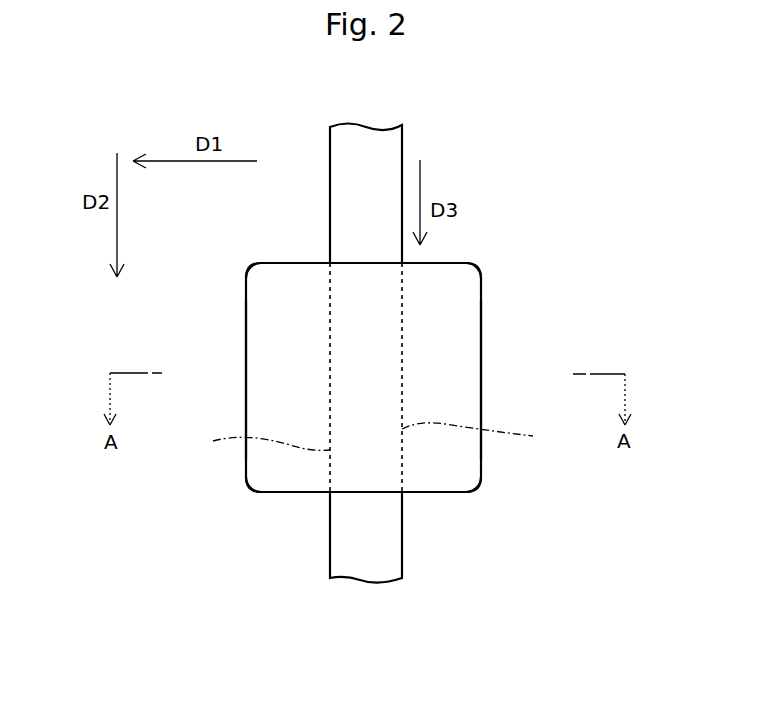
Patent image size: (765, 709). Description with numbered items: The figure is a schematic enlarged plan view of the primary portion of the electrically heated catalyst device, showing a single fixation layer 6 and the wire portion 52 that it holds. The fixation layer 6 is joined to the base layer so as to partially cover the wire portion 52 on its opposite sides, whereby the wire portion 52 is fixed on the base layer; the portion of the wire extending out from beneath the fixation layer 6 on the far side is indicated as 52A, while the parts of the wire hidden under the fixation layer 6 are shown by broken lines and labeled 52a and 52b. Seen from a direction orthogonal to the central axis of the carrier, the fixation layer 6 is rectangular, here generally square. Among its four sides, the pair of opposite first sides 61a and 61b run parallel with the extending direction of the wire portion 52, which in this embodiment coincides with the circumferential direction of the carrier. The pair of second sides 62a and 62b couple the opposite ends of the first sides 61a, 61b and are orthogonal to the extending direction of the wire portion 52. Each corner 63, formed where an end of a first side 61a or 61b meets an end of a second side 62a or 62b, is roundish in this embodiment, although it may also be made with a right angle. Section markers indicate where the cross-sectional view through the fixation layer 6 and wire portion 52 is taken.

The fixation layer 6 is at (466, 395).
The wire portion 52 is at (363, 167).
The shaft lower portion 52A is at (373, 558).
The shaft first side surface 52a is at (252, 443).
The shaft second side surface 52b is at (488, 435).
The first side 61a is at (247, 343).
The first side 61b is at (481, 327).
The second side 62a is at (308, 262).
The second side 62b is at (293, 494).
The corner 63 is at (247, 275).